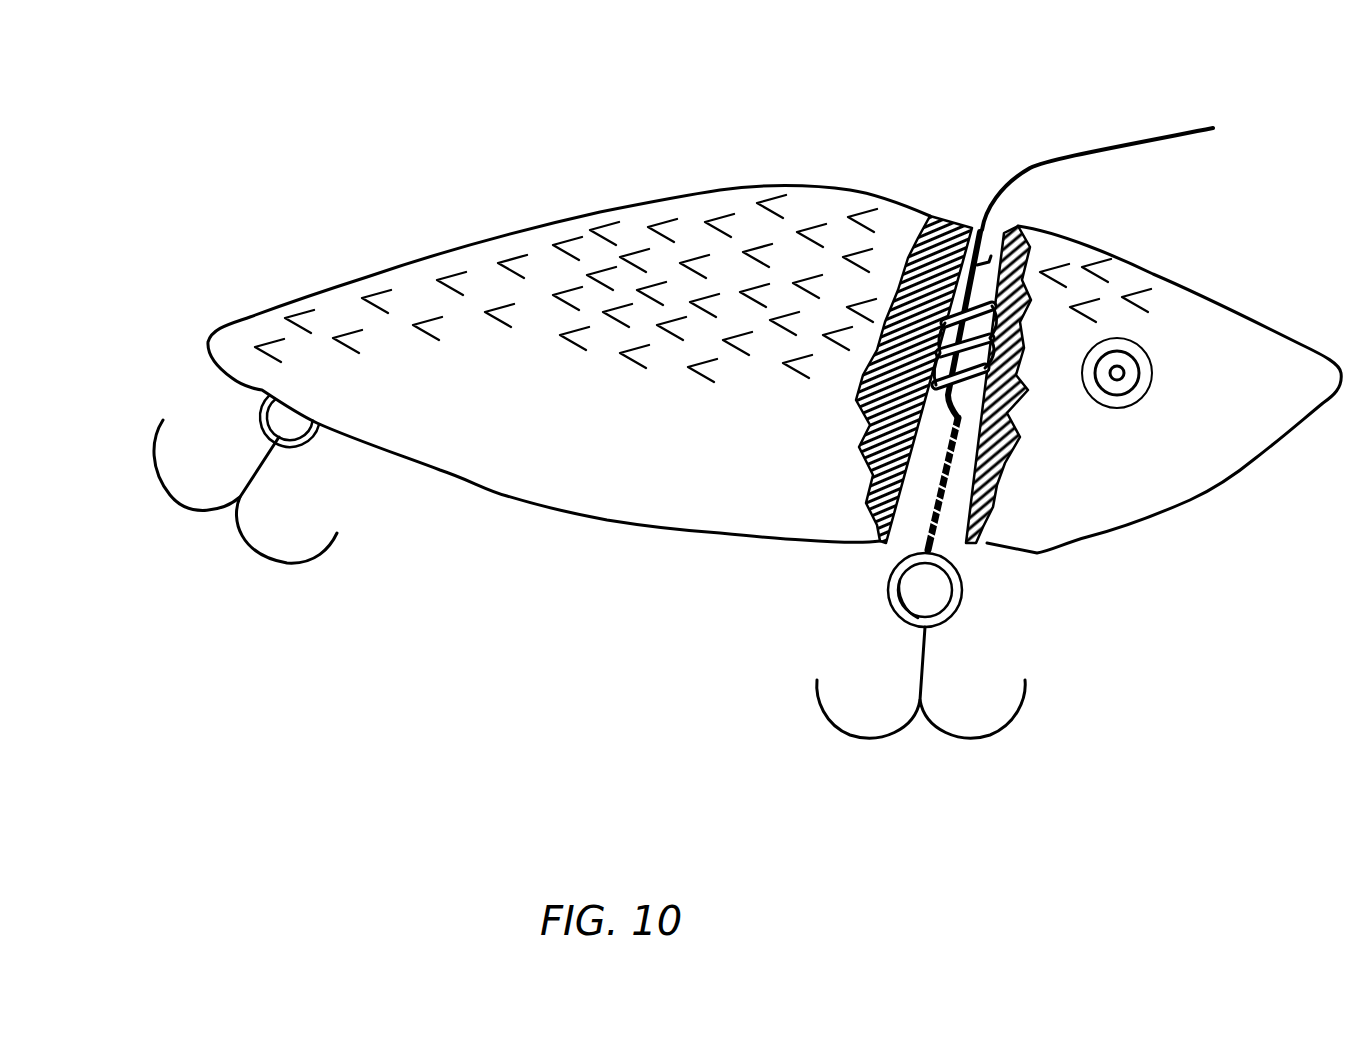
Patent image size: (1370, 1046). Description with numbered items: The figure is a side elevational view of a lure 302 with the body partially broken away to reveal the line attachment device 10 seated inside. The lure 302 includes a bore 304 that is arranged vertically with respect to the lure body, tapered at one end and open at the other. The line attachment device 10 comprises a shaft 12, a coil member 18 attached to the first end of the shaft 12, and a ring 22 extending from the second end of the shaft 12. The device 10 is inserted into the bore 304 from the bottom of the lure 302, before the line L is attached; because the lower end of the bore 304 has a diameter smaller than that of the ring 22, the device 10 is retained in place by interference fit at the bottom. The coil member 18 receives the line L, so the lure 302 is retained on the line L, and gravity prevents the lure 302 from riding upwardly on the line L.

The line attachment device 10 is at (785, 612).
The shaft 12 is at (870, 463).
The coil member 18 is at (1010, 422).
The ring 22 is at (962, 592).
The lure 302 is at (518, 497).
The bore 304 is at (968, 230).
The line L is at (1118, 148).